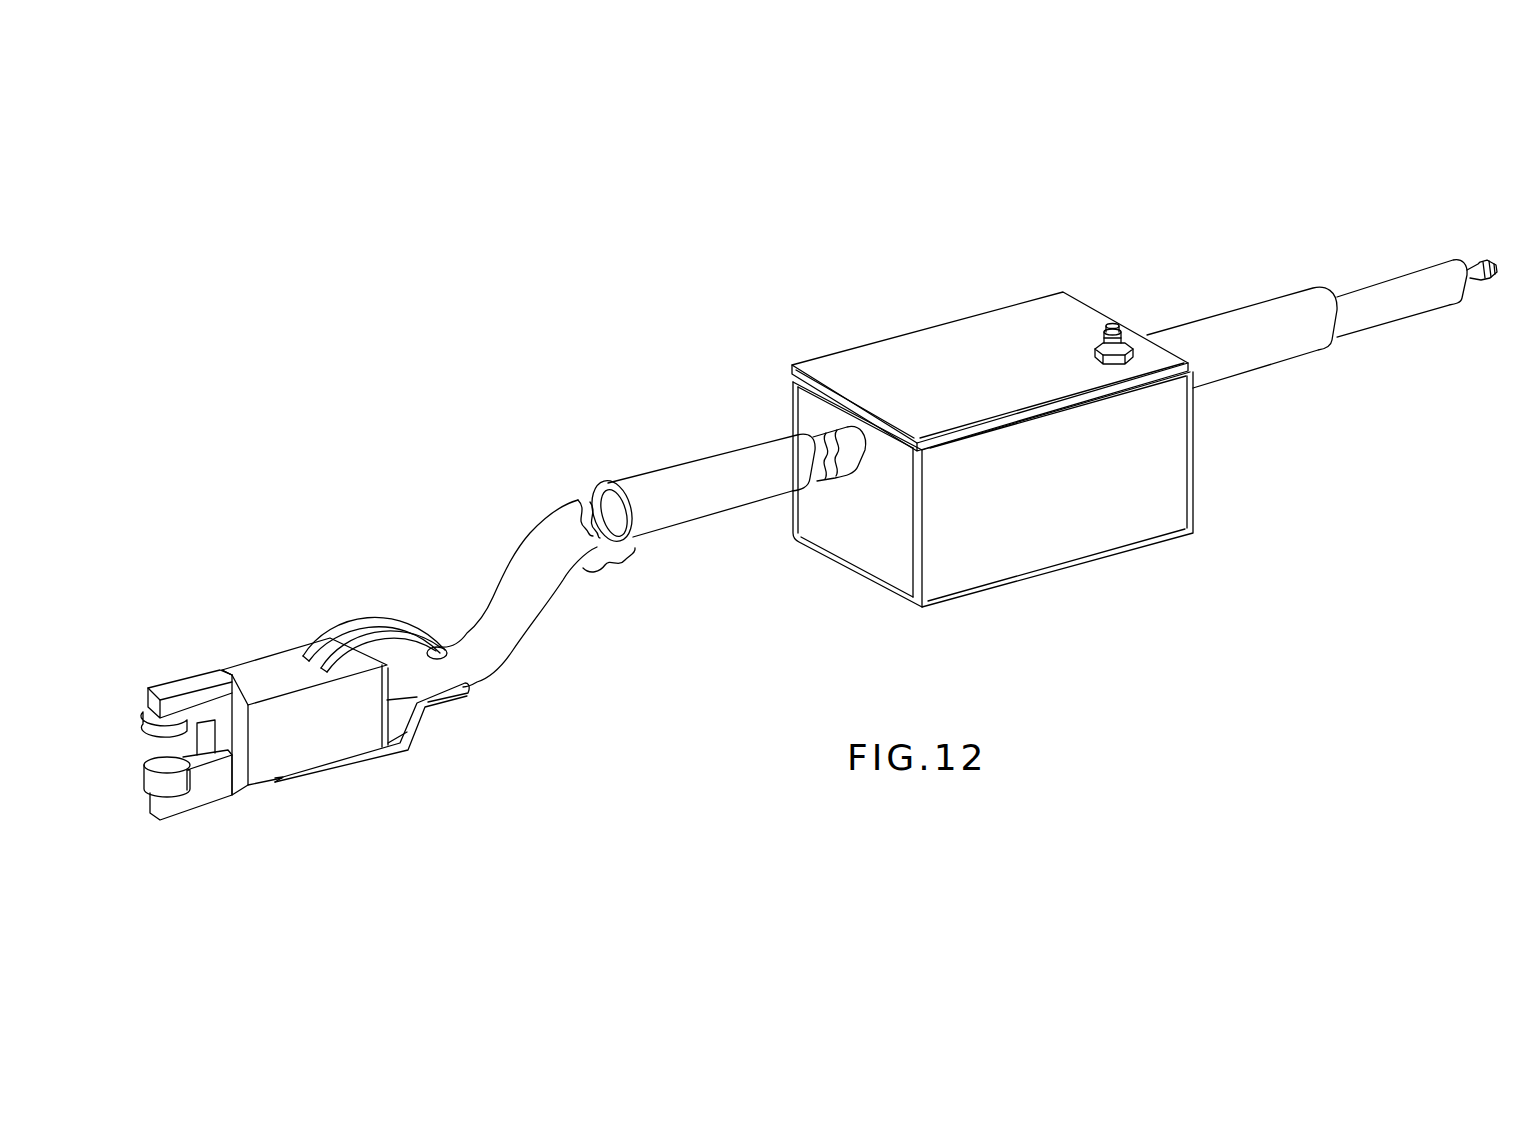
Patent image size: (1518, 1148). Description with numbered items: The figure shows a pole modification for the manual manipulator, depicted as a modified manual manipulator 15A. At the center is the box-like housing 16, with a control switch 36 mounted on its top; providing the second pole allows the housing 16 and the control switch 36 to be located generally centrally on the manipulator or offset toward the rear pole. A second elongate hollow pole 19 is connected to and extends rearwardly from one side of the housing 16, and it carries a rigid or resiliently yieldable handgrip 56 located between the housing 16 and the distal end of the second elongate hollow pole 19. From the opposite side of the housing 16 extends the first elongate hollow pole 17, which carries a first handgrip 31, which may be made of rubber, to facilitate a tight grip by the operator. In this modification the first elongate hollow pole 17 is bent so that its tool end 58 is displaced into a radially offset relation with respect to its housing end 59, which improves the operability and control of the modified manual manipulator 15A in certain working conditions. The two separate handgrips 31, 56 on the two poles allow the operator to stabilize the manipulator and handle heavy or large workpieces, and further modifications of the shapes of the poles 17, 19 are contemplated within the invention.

The modified manual manipulator 15A is at (766, 322).
The housing 16 is at (877, 350).
The control switch 36 is at (1112, 322).
The handgrip 56 is at (1247, 323).
The second elongate hollow pole 19 is at (1370, 280).
The first handgrip 31 is at (670, 473).
The housing end 59 is at (842, 432).
The first elongate hollow pole 17 is at (555, 513).
The tool end 58 is at (403, 680).